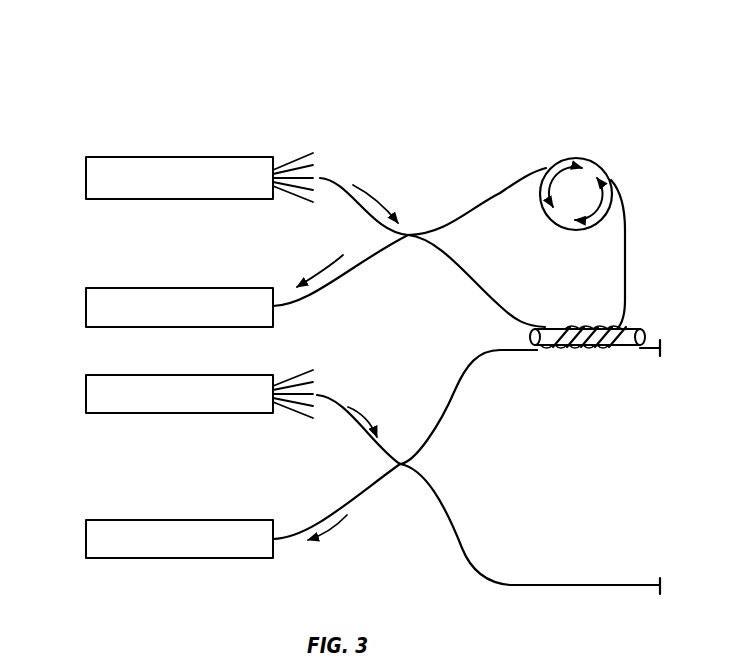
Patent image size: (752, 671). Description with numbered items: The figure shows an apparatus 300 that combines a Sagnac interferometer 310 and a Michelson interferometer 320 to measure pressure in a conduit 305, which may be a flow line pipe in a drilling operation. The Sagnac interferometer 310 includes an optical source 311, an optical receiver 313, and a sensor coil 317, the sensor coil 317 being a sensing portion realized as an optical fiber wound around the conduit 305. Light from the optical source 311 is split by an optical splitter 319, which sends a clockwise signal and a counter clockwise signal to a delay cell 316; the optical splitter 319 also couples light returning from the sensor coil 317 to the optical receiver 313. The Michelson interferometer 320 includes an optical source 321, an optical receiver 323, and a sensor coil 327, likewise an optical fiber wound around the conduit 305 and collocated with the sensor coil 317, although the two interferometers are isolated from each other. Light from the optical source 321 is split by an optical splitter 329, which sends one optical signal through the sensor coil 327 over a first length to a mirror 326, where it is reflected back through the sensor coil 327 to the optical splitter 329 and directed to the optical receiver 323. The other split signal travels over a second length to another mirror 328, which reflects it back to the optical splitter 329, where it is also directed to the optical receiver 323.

The apparatus 300 is at (100, 52).
The conduit 305 is at (630, 330).
The Sagnac interferometer 310 is at (90, 234).
The optical source 311 is at (99, 157).
The optical receiver 313 is at (99, 288).
The delay cell 316 is at (607, 170).
The sensor coil 317 is at (600, 327).
The optical splitter 319 is at (410, 233).
The Michelson interferometer 320 is at (90, 452).
The optical source 321 is at (99, 375).
The optical receiver 323 is at (99, 520).
The mirror 326 is at (662, 350).
The sensor coil 327 is at (520, 350).
The mirror 328 is at (662, 587).
The optical splitter 329 is at (399, 462).